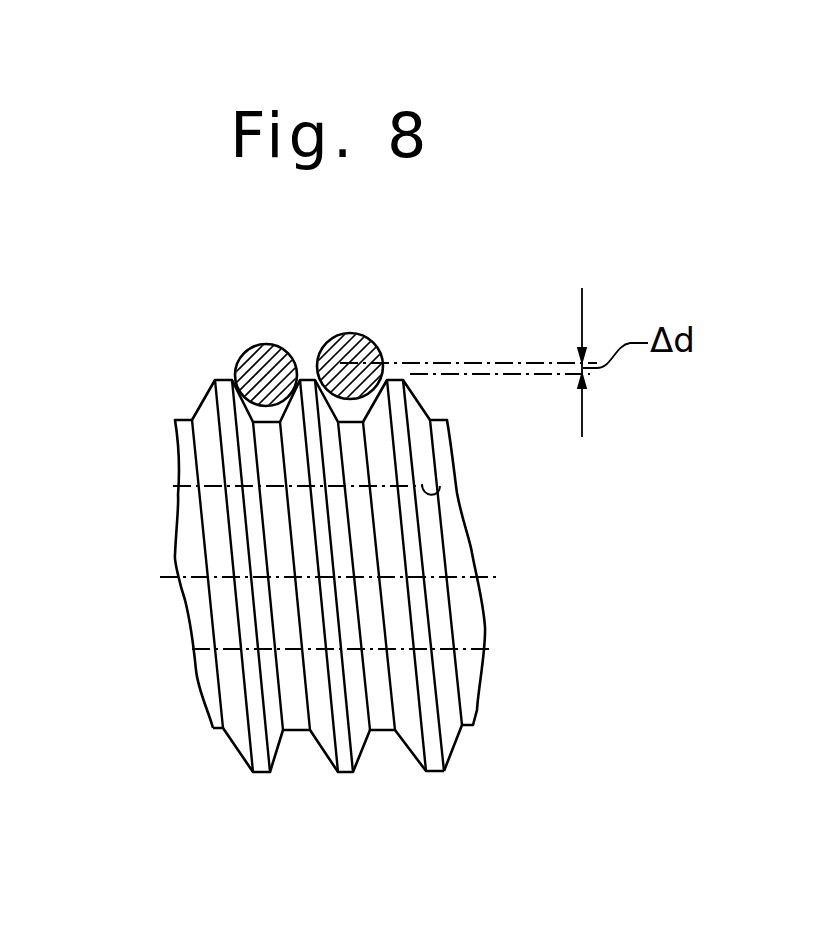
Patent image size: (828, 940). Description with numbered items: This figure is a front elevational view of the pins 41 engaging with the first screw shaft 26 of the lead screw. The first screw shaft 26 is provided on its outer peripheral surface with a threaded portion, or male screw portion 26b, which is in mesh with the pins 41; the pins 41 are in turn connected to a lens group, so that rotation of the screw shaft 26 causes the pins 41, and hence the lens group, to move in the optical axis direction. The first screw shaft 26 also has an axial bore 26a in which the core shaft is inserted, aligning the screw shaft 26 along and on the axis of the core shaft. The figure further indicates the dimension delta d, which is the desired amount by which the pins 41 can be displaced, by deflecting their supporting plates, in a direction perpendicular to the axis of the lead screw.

The first screw shaft 26 is at (215, 381).
The axial bore 26a is at (445, 488).
The male screw portion 26b is at (440, 772).
The pin 41 is at (266, 344).